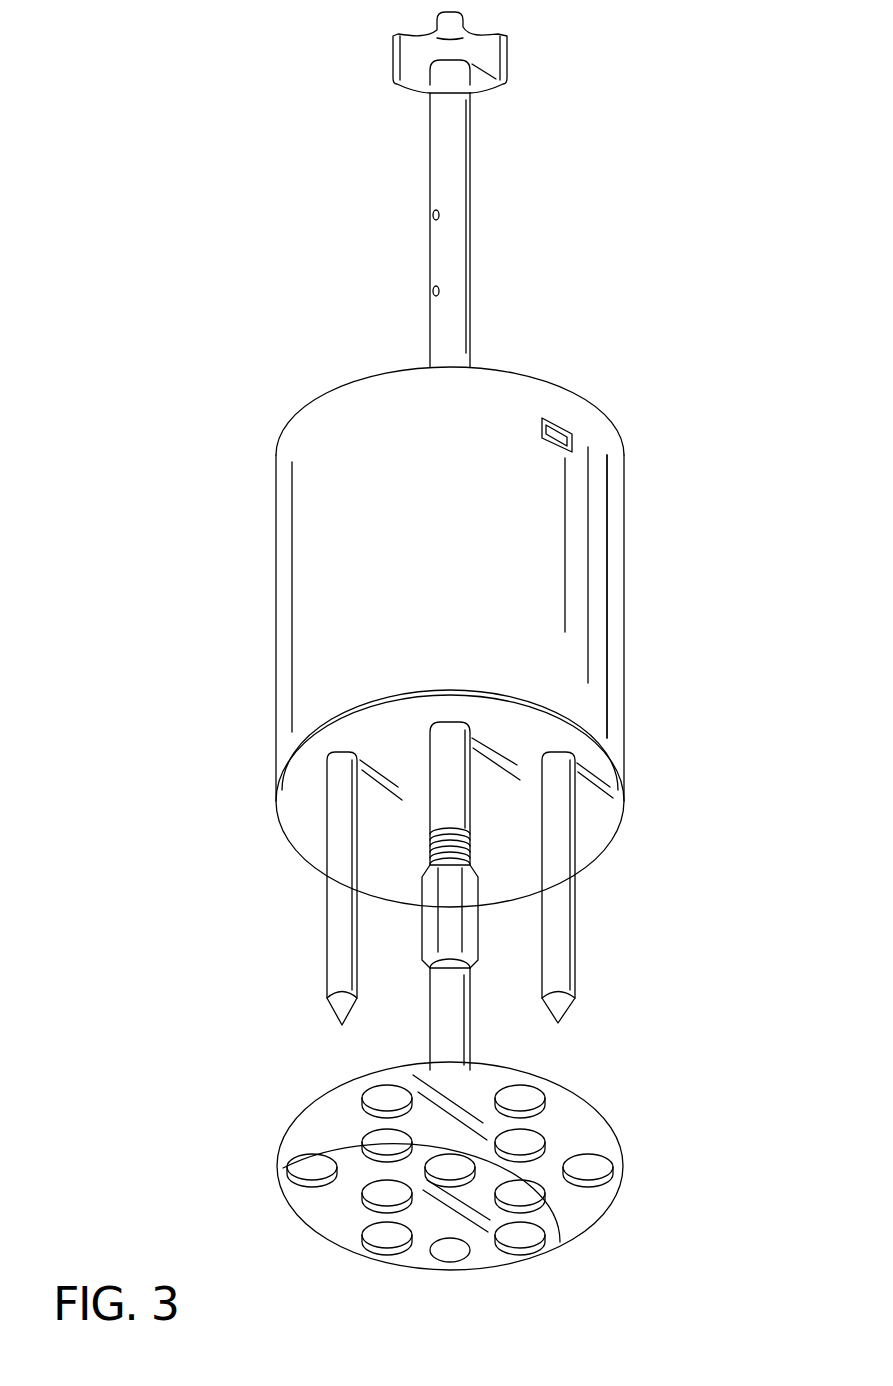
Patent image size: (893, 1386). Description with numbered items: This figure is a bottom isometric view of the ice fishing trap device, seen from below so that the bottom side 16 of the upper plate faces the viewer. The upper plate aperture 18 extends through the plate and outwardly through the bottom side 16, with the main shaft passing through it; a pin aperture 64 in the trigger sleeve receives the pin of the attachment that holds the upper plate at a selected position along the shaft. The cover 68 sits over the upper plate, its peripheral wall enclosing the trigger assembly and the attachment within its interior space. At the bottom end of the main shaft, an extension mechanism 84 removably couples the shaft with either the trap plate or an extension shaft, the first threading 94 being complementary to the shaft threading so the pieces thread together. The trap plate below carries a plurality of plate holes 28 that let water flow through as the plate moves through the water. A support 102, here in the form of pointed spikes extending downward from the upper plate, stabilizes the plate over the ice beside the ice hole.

The bottom side 16 is at (598, 810).
The upper plate aperture 18 is at (440, 722).
The plate holes 28 is at (527, 1142).
The pin aperture 64 is at (431, 217).
The cover 68 is at (603, 652).
The extension mechanism 84 is at (492, 983).
The first threading 94 is at (440, 1260).
The support 102 is at (333, 915).